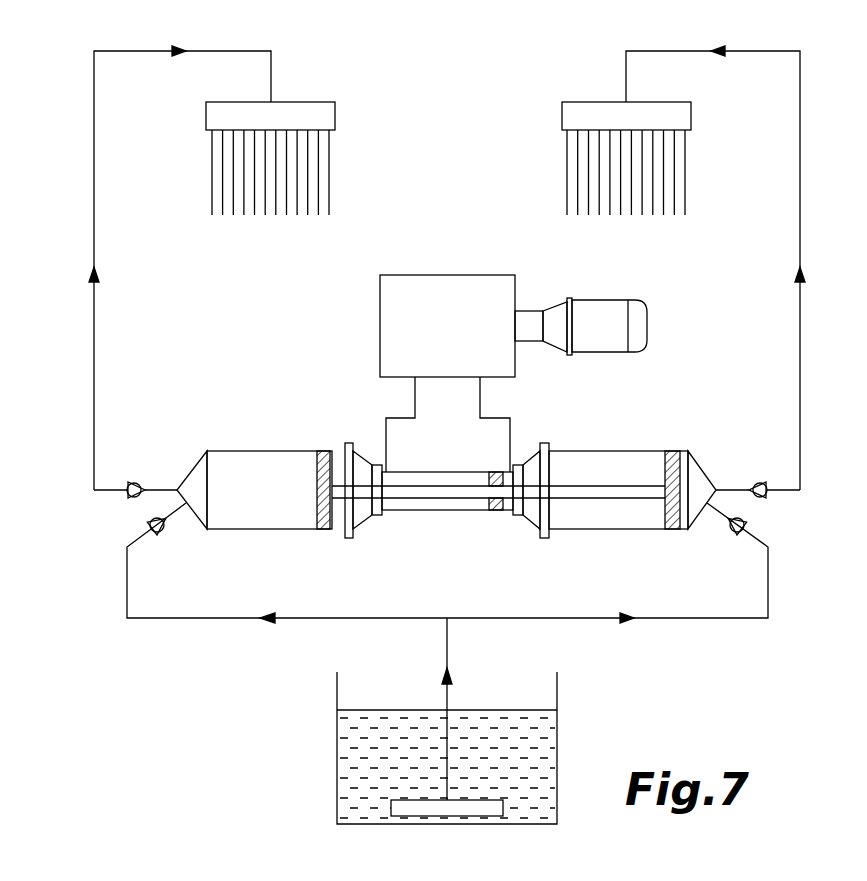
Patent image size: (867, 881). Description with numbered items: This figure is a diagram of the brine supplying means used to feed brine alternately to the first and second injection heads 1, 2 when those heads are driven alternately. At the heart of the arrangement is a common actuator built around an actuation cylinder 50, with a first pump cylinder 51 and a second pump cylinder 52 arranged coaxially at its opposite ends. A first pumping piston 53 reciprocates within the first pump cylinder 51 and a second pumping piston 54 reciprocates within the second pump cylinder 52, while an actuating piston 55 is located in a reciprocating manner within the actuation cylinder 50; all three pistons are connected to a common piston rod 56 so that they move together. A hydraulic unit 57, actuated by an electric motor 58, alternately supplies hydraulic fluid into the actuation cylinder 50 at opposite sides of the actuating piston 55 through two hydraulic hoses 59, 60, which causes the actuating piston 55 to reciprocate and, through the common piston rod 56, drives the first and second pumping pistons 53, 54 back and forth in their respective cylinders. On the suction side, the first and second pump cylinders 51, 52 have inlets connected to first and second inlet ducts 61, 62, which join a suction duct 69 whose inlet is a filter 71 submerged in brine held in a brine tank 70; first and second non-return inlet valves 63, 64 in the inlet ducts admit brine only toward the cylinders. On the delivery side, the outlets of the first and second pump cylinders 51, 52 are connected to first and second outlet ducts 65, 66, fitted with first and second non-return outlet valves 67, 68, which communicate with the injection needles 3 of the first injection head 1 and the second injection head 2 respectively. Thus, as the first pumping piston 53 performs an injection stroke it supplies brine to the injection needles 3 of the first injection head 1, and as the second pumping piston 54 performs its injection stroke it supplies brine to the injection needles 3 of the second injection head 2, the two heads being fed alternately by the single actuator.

The first injection head 1 is at (284, 101).
The second injection head 2 is at (612, 108).
The injection needles 3 is at (331, 175).
The actuation cylinder 50 is at (427, 512).
The first pump cylinder 51 is at (277, 450).
The second pump cylinder 52 is at (618, 451).
The first pumping piston 53 is at (322, 531).
The second pumping piston 54 is at (670, 532).
The actuating piston 55 is at (497, 511).
The common piston rod 56 is at (600, 494).
The hydraulic unit 57 is at (449, 283).
The electric motor 58 is at (604, 308).
The hydraulic hose 59 is at (385, 428).
The hydraulic hose 60 is at (511, 428).
The first inlet duct 61 is at (197, 620).
The second inlet duct 62 is at (693, 620).
The first non-return inlet valve 63 is at (160, 531).
The second non-return inlet valve 64 is at (736, 535).
The first outlet duct 65 is at (96, 178).
The second outlet duct 66 is at (797, 178).
The first non-return outlet valve 67 is at (137, 483).
The second non-return outlet valve 68 is at (758, 482).
The suction duct 69 is at (448, 650).
The brine tank 70 is at (337, 758).
The filter 71 is at (492, 804).